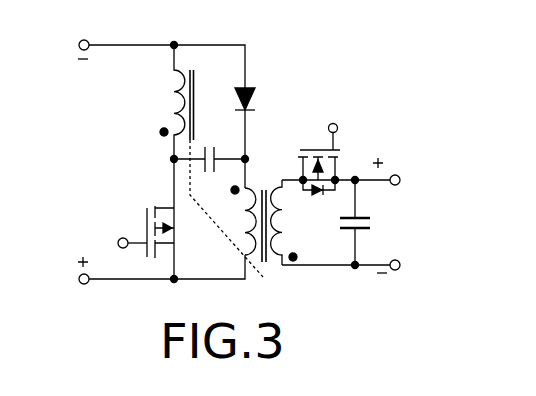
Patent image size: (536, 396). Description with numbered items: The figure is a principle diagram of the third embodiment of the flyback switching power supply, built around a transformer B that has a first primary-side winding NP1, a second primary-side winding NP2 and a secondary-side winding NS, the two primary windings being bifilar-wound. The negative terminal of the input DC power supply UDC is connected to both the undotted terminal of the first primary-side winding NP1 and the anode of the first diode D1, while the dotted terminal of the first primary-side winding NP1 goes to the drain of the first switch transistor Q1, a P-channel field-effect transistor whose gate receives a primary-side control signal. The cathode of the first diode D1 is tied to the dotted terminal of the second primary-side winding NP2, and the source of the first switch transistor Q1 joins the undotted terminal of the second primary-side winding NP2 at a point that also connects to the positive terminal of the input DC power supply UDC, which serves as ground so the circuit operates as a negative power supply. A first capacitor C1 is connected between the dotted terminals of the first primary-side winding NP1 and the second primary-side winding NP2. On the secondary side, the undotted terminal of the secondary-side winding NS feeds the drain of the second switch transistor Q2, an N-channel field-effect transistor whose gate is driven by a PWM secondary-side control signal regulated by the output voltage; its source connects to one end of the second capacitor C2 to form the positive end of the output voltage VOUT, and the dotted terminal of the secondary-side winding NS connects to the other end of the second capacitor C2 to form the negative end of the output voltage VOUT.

The input DC power supply UDC is at (158, 162).
The first primary-side winding NP1 is at (170, 126).
The first diode D1 is at (239, 128).
The first capacitor C1 is at (209, 168).
The first switch transistor Q1 is at (146, 242).
The second primary-side winding NP2 is at (241, 224).
The transformer B is at (259, 174).
The secondary-side winding NS is at (285, 222).
The second switch transistor Q2 is at (326, 160).
The second capacitor C2 is at (356, 223).
The output voltage VOUT is at (343, 215).